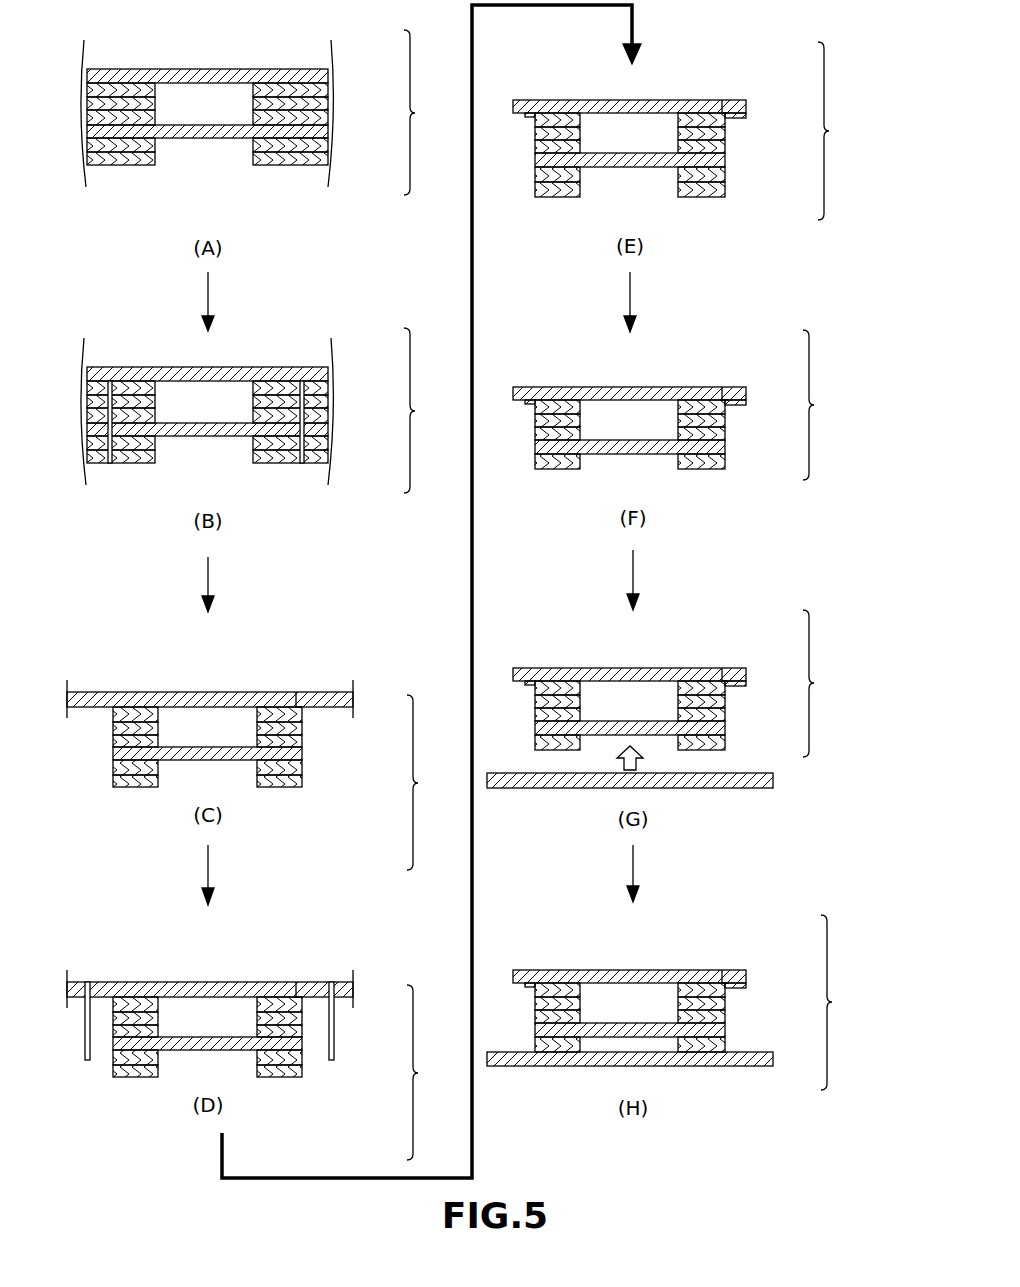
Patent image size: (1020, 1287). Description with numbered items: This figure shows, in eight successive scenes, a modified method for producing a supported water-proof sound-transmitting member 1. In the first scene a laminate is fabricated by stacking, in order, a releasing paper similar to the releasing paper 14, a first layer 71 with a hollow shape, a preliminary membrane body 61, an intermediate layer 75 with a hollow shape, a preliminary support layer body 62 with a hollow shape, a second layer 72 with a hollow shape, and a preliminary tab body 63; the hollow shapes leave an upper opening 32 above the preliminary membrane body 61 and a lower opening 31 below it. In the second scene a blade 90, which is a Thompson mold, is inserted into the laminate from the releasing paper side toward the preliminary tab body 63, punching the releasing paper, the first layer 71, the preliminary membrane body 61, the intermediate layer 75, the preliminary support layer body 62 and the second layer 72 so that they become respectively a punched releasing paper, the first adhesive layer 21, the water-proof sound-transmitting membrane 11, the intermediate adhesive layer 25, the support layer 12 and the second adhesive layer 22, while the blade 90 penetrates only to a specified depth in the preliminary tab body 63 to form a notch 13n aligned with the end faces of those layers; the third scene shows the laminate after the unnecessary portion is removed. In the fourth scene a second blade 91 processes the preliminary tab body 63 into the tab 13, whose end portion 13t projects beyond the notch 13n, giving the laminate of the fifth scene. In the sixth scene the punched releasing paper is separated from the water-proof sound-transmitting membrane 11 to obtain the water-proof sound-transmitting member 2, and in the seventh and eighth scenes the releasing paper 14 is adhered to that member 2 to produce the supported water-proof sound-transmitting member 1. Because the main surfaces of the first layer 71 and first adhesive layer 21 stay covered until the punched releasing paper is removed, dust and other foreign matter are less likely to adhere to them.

The supported water-proof sound-transmitting member 1 is at (835, 1002).
The water-proof sound-transmitting member 2 is at (817, 543).
The water-proof sound-transmitting membrane 11 is at (302, 753).
The support layer 12 is at (302, 728).
The tab 13 is at (748, 106).
The notch 13n is at (723, 100).
The tab of top plate 13t is at (738, 110).
The releasing paper 14 is at (775, 779).
The first adhesive layer 21 is at (302, 767).
The second adhesive layer 22 is at (302, 714).
The intermediate adhesive layer 25 is at (302, 741).
The lower cavity 31 is at (209, 155).
The upper cavity 32 is at (214, 91).
The preliminary membrane body 61 is at (328, 131).
The preliminary support layer body 62 is at (328, 104).
The preliminary tab body 63 is at (328, 76).
The first layer 71 is at (328, 145).
The second layer 72 is at (328, 90).
The intermediate layer 75 is at (328, 117).
The blade 90 is at (110, 463).
The blade 91 is at (88, 1058).